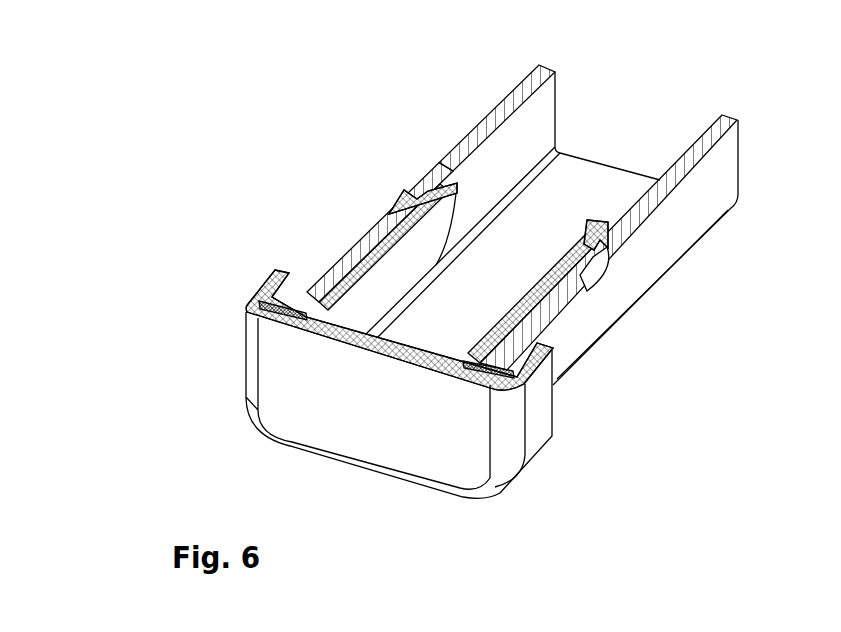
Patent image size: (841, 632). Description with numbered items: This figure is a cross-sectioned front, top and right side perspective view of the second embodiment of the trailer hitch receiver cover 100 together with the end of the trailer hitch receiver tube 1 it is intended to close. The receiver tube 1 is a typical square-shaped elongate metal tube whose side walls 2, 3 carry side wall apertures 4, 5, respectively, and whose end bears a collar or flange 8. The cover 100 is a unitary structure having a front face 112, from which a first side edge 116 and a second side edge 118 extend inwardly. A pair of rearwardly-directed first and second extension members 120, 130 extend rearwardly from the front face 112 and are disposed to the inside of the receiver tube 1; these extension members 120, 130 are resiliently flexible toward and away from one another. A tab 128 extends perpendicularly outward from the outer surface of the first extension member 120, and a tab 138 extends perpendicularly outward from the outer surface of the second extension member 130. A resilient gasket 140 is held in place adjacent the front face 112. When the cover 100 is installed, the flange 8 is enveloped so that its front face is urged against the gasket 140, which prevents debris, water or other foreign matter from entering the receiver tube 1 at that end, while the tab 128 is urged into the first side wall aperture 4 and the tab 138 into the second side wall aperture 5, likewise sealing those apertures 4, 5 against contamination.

The trailer hitch receiver cover 100 is at (104, 163).
The trailer hitch receiver tube 1 is at (597, 173).
The side wall 2 is at (496, 112).
The side wall 3 is at (716, 188).
The side wall aperture 4 is at (384, 220).
The side wall aperture 5 is at (604, 254).
The flange 8 is at (287, 291).
The front face 112 is at (388, 445).
The first side edge 116 is at (254, 368).
The second side edge 118 is at (539, 404).
The first extension member 120 is at (392, 277).
The tab 128 is at (403, 209).
The second extension member 130 is at (524, 296).
The tab 138 is at (593, 271).
The resilient gasket 140 is at (256, 312).